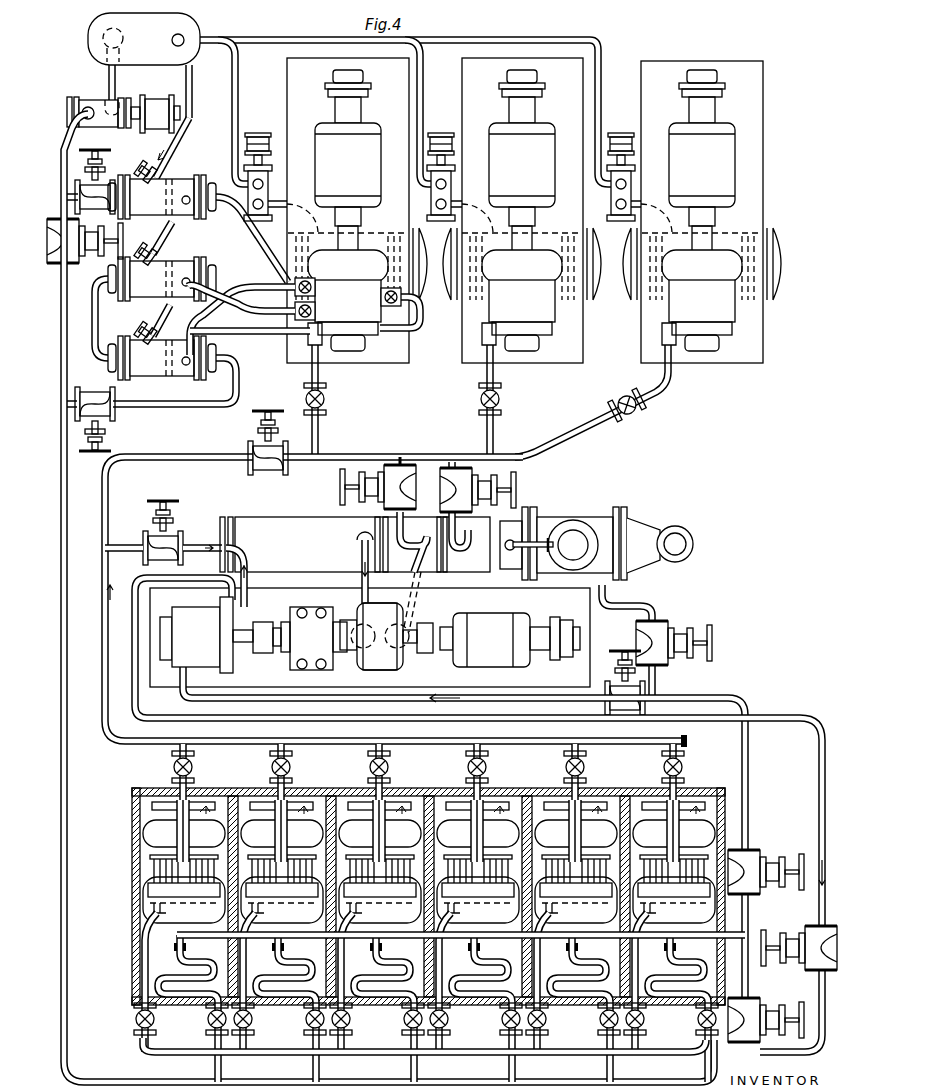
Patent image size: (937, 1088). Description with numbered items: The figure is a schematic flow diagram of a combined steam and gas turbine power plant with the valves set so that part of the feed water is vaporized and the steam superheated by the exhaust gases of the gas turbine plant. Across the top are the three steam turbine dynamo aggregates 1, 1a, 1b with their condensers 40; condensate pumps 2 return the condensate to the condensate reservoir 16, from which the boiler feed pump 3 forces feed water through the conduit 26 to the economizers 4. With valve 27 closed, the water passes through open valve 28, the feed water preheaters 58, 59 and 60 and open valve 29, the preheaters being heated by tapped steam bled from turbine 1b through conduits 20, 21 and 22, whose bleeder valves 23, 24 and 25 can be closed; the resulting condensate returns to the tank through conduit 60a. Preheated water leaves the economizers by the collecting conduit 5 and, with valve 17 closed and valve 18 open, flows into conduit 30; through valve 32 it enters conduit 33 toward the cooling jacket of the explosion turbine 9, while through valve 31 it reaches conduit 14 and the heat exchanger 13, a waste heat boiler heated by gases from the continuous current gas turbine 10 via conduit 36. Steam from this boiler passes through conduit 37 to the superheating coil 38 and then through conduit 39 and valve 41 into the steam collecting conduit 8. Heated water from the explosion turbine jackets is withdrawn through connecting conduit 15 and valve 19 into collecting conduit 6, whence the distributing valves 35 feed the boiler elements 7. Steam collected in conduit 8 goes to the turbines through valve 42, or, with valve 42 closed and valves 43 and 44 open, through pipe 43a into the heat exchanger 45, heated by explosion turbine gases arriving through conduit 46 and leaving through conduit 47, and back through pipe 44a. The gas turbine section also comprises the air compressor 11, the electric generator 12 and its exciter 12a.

The steam turbine dynamo aggregate 1 is at (758, 105).
The steam turbine dynamo aggregate 1a is at (470, 92).
The steam turbine dynamo aggregate 1b is at (287, 94).
The condensate pump 2 is at (258, 133).
The boiler feed pump 3 is at (97, 100).
The economizer 4 is at (173, 963).
The collecting conduit 5 is at (748, 905).
The collecting conduit 6 is at (172, 1052).
The steam boiler 7 is at (158, 836).
The steam collecting conduit 8 is at (218, 456).
The explosion turbine 9 is at (208, 612).
The continuous current gas turbine 10 is at (392, 650).
The air compressor 11 is at (298, 655).
The electric generator 12 is at (483, 650).
The exciter 12a is at (560, 620).
The heat exchanger 13 is at (598, 516).
The connecting conduit 14 is at (640, 604).
The connecting conduit 15 is at (140, 590).
The condensate reservoir 16 is at (93, 50).
The valve 17 is at (758, 1006).
The valve 18 is at (762, 862).
The valve 19 is at (812, 935).
The conduit 20 is at (232, 298).
The conduit 21 is at (252, 331).
The conduit 22 is at (265, 238).
The bleeder valve 23 is at (316, 312).
The bleeder valve 24 is at (391, 306).
The bleeder valve 25 is at (316, 289).
The conduit 26 is at (66, 556).
The valve 27 is at (72, 262).
The valve 28 is at (104, 178).
The valve 29 is at (113, 410).
The conduit 30 is at (725, 694).
The valve 31 is at (670, 636).
The valve 32 is at (616, 668).
The conduit 33 is at (186, 695).
The distributing valve 35 is at (156, 1019).
The conduit 36 is at (420, 580).
The conduit 37 is at (550, 540).
The superheating coil 38 is at (478, 498).
The conduit 39 is at (460, 543).
The condenser 40 is at (385, 240).
The valve 41 is at (490, 490).
The valve 42 is at (272, 475).
The valve 43 is at (153, 518).
The pipe 43a is at (208, 538).
The valve 44 is at (407, 488).
The pipe 44a is at (372, 497).
The heat exchanger 45 is at (312, 530).
The conduit 46 is at (250, 578).
The conduit 47 is at (360, 578).
The feed water preheater 58 is at (190, 178).
The feed water preheater 59 is at (118, 290).
The feed water preheater 60 is at (118, 368).
The conduit 60a is at (190, 118).